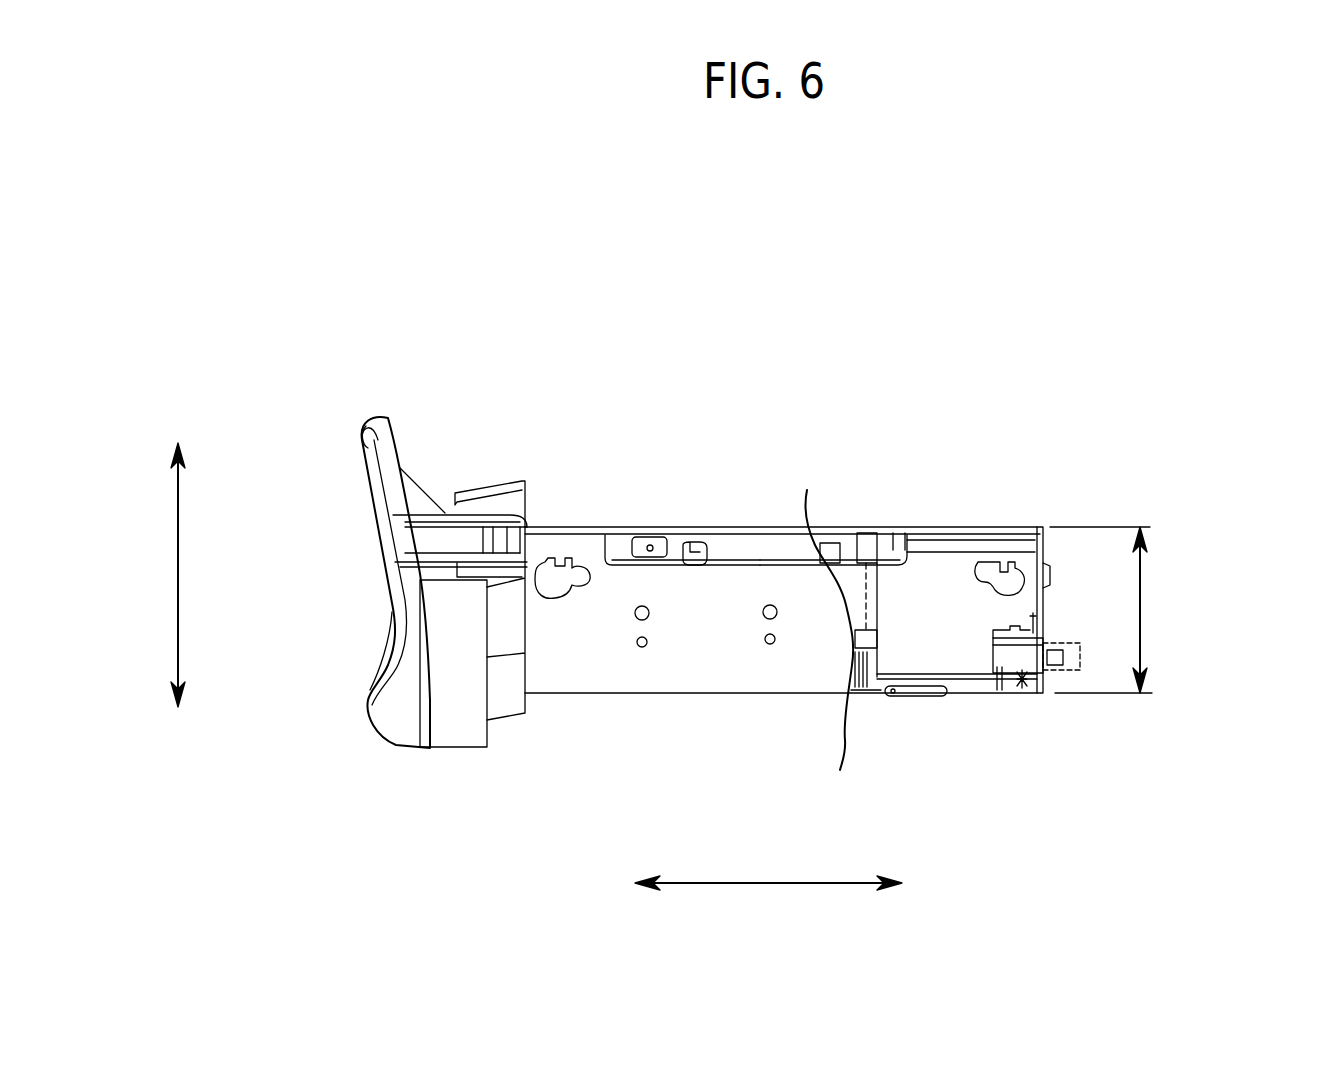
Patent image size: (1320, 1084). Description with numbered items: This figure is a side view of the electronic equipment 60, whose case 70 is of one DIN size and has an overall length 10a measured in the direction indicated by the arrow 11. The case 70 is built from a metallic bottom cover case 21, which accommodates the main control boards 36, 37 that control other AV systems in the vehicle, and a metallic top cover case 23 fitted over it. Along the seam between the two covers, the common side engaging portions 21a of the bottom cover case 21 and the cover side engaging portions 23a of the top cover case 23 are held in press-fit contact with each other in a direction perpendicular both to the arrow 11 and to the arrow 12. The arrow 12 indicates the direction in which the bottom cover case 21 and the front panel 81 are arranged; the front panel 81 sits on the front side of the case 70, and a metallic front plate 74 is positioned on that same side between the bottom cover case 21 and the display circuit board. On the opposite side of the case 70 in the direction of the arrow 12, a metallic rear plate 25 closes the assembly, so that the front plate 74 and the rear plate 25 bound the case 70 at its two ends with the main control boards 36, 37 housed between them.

The overall length 10a is at (1143, 600).
The arrow 11 is at (181, 497).
The arrow 12 is at (765, 885).
The bottom cover case 21 is at (707, 672).
The common side engaging portions 21a is at (698, 543).
The top cover case 23 is at (576, 527).
The cover side engaging portions 23a is at (770, 547).
The rear plate 25 is at (1045, 612).
The main control board 36 is at (958, 700).
The main control board 37 is at (977, 545).
The electronic equipment 60 is at (905, 254).
The case 70 is at (951, 401).
The front plate 74 is at (502, 697).
The front panel 81 is at (393, 720).